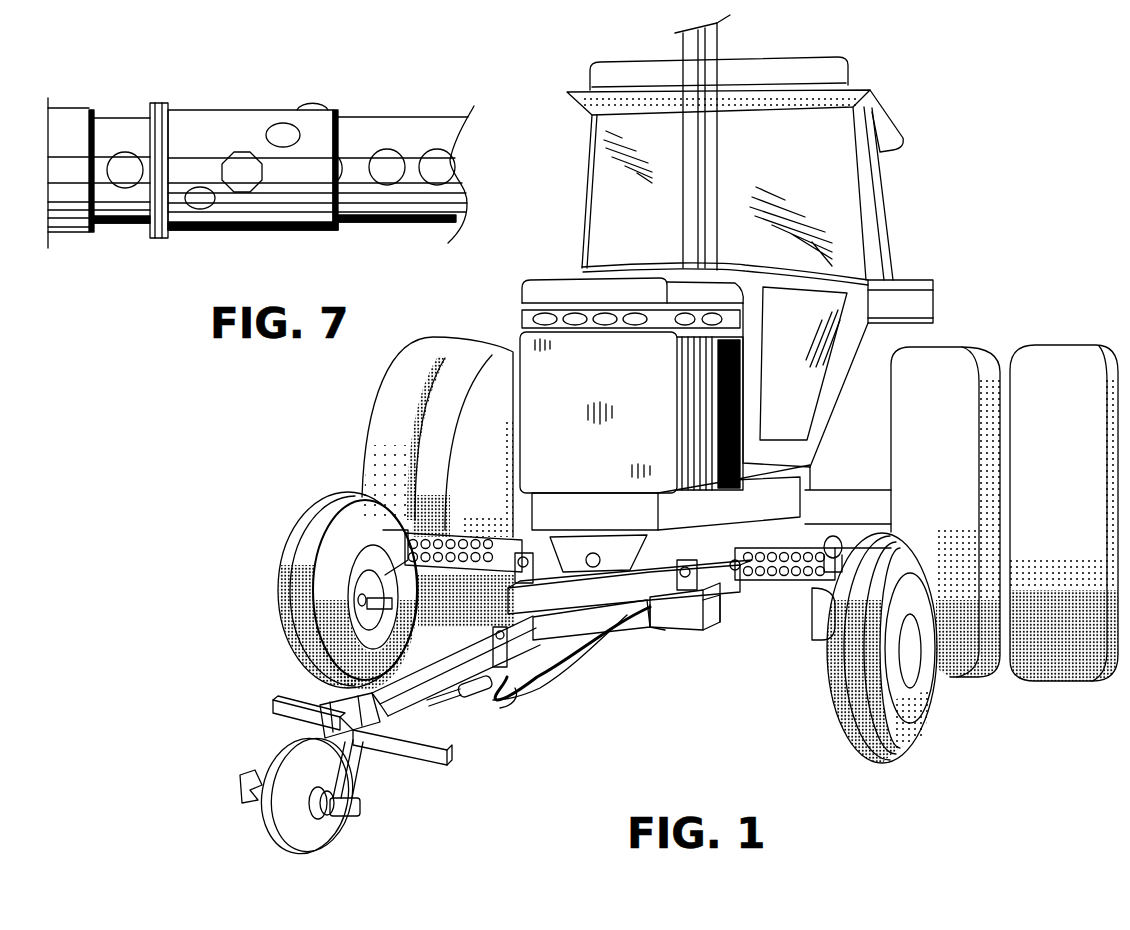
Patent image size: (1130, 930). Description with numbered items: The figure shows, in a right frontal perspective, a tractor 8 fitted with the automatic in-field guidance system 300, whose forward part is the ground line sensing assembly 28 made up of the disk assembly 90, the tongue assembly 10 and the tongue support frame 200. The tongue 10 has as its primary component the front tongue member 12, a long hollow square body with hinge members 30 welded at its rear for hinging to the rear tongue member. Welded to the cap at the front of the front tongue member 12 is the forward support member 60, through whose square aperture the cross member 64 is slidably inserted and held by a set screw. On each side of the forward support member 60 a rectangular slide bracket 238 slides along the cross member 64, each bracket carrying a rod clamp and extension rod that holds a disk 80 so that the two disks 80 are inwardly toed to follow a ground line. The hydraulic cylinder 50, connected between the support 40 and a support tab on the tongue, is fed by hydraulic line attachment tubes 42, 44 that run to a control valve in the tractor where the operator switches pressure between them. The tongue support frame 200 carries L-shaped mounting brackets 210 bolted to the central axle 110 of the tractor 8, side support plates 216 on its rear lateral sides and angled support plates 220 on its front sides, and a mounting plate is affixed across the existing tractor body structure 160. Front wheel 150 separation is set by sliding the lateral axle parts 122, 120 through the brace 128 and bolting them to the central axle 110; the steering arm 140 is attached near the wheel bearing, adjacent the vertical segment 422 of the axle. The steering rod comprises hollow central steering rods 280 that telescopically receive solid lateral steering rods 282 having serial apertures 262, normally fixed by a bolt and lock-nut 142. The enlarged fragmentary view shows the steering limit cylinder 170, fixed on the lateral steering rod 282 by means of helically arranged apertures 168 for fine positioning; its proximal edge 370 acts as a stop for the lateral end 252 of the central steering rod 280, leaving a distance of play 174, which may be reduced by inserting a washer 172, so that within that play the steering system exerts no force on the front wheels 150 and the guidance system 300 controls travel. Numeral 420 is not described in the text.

In FIG. 1, the tractor 8 is at (925, 144).
In FIG. 1, the tongue assembly 10 is at (595, 650).
In FIG. 1, the front tongue member 12 is at (290, 700).
In FIG. 1, the ground line sensing assembly 28 is at (601, 730).
In FIG. 1, the hinge member 30 is at (485, 642).
In FIG. 1, the support 40 is at (557, 673).
In FIG. 1, the hydraulic line attachment tube 42 is at (560, 663).
In FIG. 1, the hydraulic line attachment tube 44 is at (533, 688).
In FIG. 1, the hydraulic cylinder 50 is at (475, 706).
In FIG. 1, the forward support member 60 is at (410, 723).
In FIG. 1, the cross member 64 is at (427, 738).
In FIG. 1, the disk 80 is at (280, 833).
In FIG. 1, the disk assembly 90 is at (244, 761).
In FIG. 1, the central axle 110 is at (670, 557).
In FIG. 1, the lateral axle part 120 is at (420, 477).
In FIG. 1, the lateral axle part 122 is at (760, 553).
In FIG. 1, the brace 128 is at (508, 483).
In FIG. 1, the steering arm 140 is at (383, 530).
In FIG. 7, the bolt and lock-nut 142 is at (240, 152).
In FIG. 1, the front wheel 150 is at (290, 560).
In FIG. 1, the tractor body structure 160 is at (610, 553).
In FIG. 7, the aperture 168 is at (277, 125).
In FIG. 7, the steering limit cylinder 170 is at (300, 222).
In FIG. 7, the washer 172 is at (163, 107).
In FIG. 7, the play 174 is at (151, 282).
In FIG. 1, the tongue support frame 200 is at (682, 636).
In FIG. 1, the L-shaped mounting bracket 210 is at (567, 550).
In FIG. 1, the side support plate 216 is at (727, 615).
In FIG. 1, the angled support plate 220 is at (677, 623).
In FIG. 1, the rectangular slide bracket 238 is at (277, 725).
In FIG. 7, the lateral end 252 is at (95, 110).
In FIG. 7, the aperture 262 is at (125, 152).
In FIG. 7, the central steering rod 280 is at (70, 120).
In FIG. 7, the lateral steering rod 282 is at (382, 123).
In FIG. 1, the guidance system 300 is at (712, 750).
In FIG. 7, the proximal edge 370 is at (178, 130).
In FIG. 1, the axle 420 is at (367, 600).
In FIG. 1, the vertical segment 422 is at (827, 630).